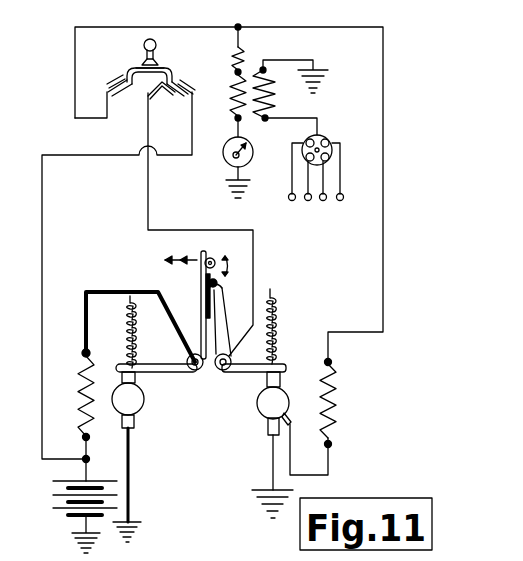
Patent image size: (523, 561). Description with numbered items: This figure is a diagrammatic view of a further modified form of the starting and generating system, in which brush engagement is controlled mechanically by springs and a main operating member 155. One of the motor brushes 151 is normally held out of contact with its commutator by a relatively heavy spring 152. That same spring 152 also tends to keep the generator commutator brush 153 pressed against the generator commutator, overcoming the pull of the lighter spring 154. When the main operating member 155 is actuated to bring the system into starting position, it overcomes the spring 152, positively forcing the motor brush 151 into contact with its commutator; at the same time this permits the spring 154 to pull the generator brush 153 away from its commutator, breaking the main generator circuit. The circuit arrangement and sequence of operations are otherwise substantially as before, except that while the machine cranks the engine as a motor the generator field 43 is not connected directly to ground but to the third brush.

The motor brush 151 is at (201, 273).
The spring 152 is at (138, 341).
The generator commutator brush 153 is at (276, 362).
The spring 154 is at (273, 306).
The main operating member 155 is at (219, 256).
The generator field 43 is at (328, 405).